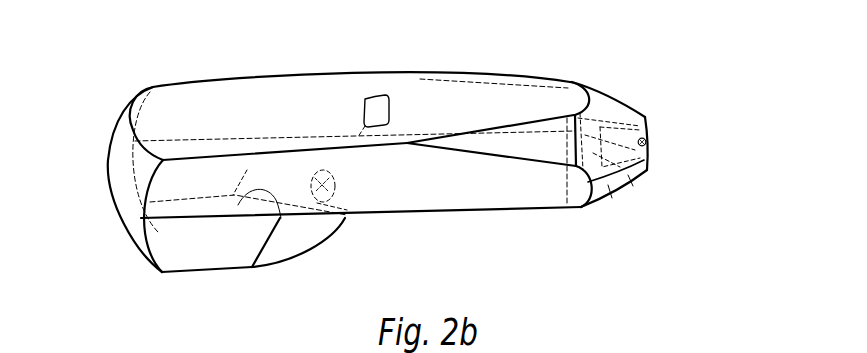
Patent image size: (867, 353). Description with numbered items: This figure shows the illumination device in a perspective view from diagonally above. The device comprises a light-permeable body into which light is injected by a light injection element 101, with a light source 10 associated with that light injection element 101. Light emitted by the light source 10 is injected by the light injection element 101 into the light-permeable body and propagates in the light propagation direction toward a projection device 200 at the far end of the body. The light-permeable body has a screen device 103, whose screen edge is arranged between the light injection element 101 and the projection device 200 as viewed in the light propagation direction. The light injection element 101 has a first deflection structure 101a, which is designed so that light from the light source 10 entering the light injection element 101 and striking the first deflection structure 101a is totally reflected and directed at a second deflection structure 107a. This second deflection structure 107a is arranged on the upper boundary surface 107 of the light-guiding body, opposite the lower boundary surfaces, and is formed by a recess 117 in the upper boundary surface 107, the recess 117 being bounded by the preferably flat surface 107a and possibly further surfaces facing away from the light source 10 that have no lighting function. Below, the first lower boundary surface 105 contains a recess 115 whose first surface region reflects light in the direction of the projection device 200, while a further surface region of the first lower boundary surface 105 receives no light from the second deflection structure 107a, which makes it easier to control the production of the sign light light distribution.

The light source 10 is at (647, 145).
The light injection element 101 is at (622, 101).
The first deflection structure 101a is at (628, 185).
The screen device 103 is at (310, 148).
The first lower boundary surface 105 is at (246, 188).
The upper boundary surface 107 is at (207, 110).
The second deflection structure 107a is at (390, 100).
The recess 115 is at (345, 178).
The recess 117 is at (383, 113).
The projection device 200 is at (123, 190).